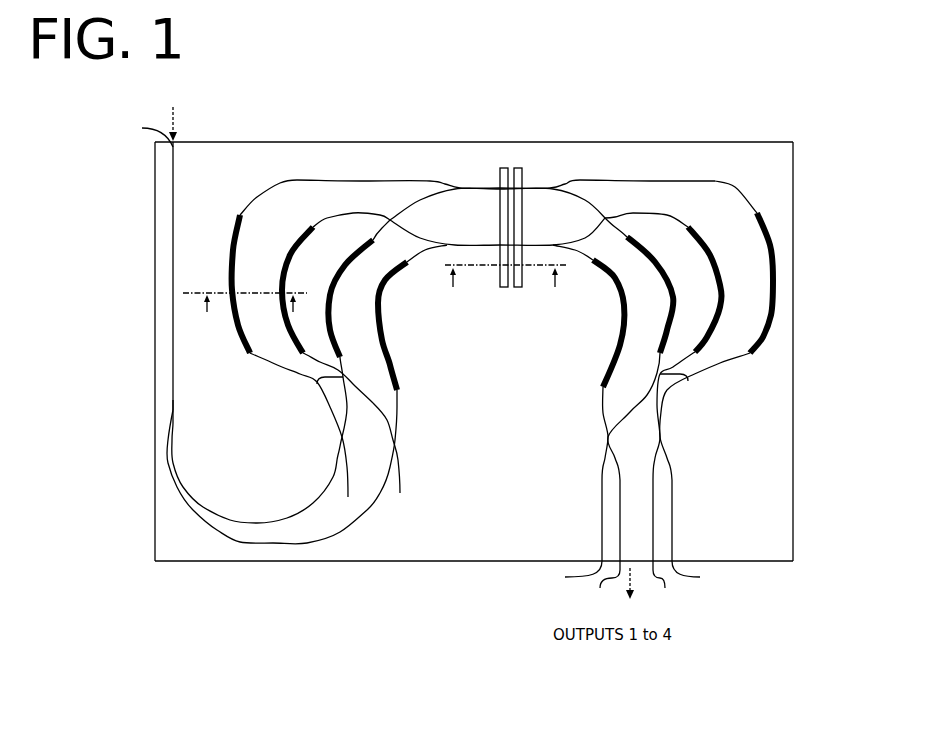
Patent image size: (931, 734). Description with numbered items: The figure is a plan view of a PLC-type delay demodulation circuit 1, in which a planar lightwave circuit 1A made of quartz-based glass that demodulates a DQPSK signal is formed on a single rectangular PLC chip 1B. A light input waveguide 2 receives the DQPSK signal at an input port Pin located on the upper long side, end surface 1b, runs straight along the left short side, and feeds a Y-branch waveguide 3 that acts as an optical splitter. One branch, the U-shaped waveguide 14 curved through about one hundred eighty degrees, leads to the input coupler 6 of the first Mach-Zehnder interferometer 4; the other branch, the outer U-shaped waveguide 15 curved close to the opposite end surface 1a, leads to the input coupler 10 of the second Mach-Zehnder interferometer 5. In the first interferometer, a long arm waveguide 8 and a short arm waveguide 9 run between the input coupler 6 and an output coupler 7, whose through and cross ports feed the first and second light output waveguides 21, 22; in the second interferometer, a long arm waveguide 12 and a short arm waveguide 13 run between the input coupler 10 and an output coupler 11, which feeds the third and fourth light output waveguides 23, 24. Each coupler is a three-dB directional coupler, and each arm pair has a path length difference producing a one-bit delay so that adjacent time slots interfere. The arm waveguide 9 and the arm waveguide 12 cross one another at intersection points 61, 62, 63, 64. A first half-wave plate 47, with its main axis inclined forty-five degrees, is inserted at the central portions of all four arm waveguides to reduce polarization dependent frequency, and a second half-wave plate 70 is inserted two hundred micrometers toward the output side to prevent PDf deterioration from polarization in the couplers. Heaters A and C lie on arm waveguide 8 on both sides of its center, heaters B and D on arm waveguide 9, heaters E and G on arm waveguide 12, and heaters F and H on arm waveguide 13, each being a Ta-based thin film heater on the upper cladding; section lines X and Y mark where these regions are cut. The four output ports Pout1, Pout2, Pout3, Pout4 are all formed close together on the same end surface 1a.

The PLC-type delay demodulation circuit 1 is at (489, 352).
The end surface 1a is at (347, 562).
The end surface 1b is at (360, 142).
The planar lightwave circuit 1A is at (506, 179).
The PLC chip 1B is at (796, 243).
The light input waveguide 2 is at (177, 343).
The Y-branch waveguide 3 is at (173, 410).
The first Mach-Zehnder interferometer 4 is at (260, 184).
The second Mach-Zehnder interferometer 5 is at (585, 318).
The input coupler 6 is at (338, 440).
The output coupler 7 is at (663, 443).
The long arm waveguide 8 is at (338, 181).
The short arm waveguide 9 is at (420, 203).
The input coupler 10 is at (395, 447).
The output coupler 11 is at (607, 447).
The long arm waveguide 12 is at (330, 215).
The short arm waveguide 13 is at (403, 400).
The input waveguide 14 is at (205, 503).
The input waveguide 15 is at (367, 523).
The first light output waveguide 21 is at (670, 493).
The second light output waveguide 22 is at (655, 520).
The third light output waveguide 23 is at (618, 527).
The fourth light output waveguide 24 is at (602, 493).
The first half-wave plate 47 is at (503, 290).
The second half-wave plate 70 is at (518, 290).
The intersection point 61 is at (390, 218).
The intersection point 62 is at (317, 383).
The intersection point 63 is at (607, 218).
The intersection point 64 is at (680, 390).
The heater A is at (240, 350).
The heater B is at (340, 273).
The heater C is at (763, 347).
The heater D is at (667, 277).
The heater E is at (288, 247).
The heater F is at (385, 313).
The heater G is at (707, 247).
The heater H is at (617, 317).
The section line X is at (248, 307).
The section line Y is at (504, 278).
The input port Pin is at (138, 133).
The output port Pout1 is at (711, 576).
The output port Pout2 is at (683, 583).
The output port Pout3 is at (590, 583).
The output port Pout4 is at (560, 574).